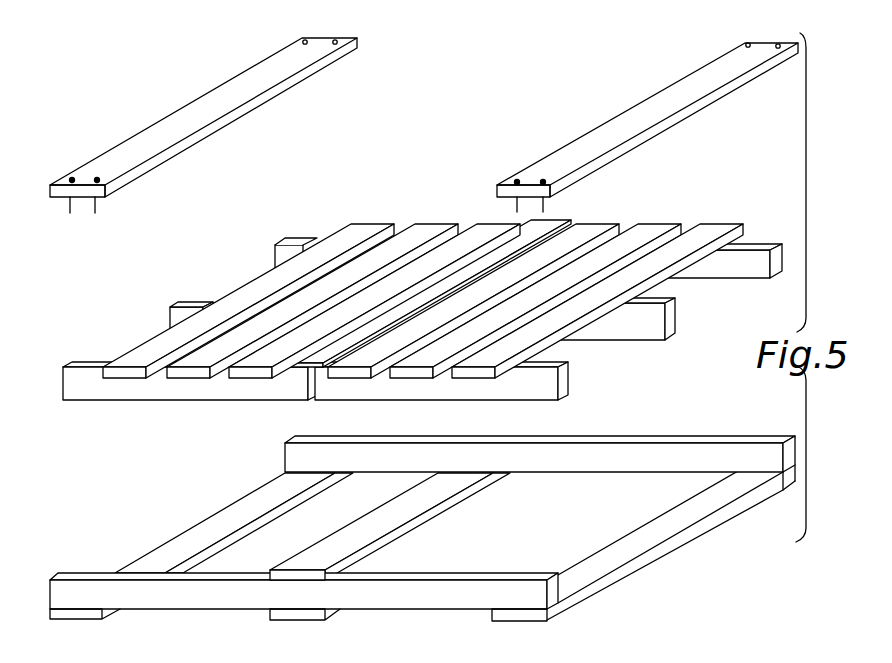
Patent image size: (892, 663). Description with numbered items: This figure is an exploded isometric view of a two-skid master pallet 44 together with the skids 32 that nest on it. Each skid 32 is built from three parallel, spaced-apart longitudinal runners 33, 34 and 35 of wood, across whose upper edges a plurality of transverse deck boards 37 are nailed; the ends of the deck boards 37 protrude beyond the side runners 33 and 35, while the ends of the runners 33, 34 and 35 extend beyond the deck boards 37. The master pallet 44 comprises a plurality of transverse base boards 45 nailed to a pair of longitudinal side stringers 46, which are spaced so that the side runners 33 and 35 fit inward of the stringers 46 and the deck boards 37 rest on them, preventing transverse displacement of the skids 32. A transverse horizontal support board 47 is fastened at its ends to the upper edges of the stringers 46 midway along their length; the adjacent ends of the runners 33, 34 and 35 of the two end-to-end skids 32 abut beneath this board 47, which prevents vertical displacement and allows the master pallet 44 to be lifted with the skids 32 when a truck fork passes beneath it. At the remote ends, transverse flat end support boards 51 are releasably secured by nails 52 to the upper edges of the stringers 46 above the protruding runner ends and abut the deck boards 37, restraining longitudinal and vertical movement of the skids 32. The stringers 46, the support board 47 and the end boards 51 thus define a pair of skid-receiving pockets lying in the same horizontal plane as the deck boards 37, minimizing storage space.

The skid 32 is at (261, 280).
The side runner 33 is at (90, 363).
The runner 34 is at (187, 302).
The side runner 35 is at (291, 243).
The deck board 37 is at (393, 220).
The master pallet 44 is at (422, 529).
The base board 45 is at (80, 614).
The longitudinal side stringer 46 is at (628, 469).
The transverse horizontal support board 47 is at (378, 513).
The transverse end support board 51 is at (204, 99).
The nail 52 is at (336, 72).